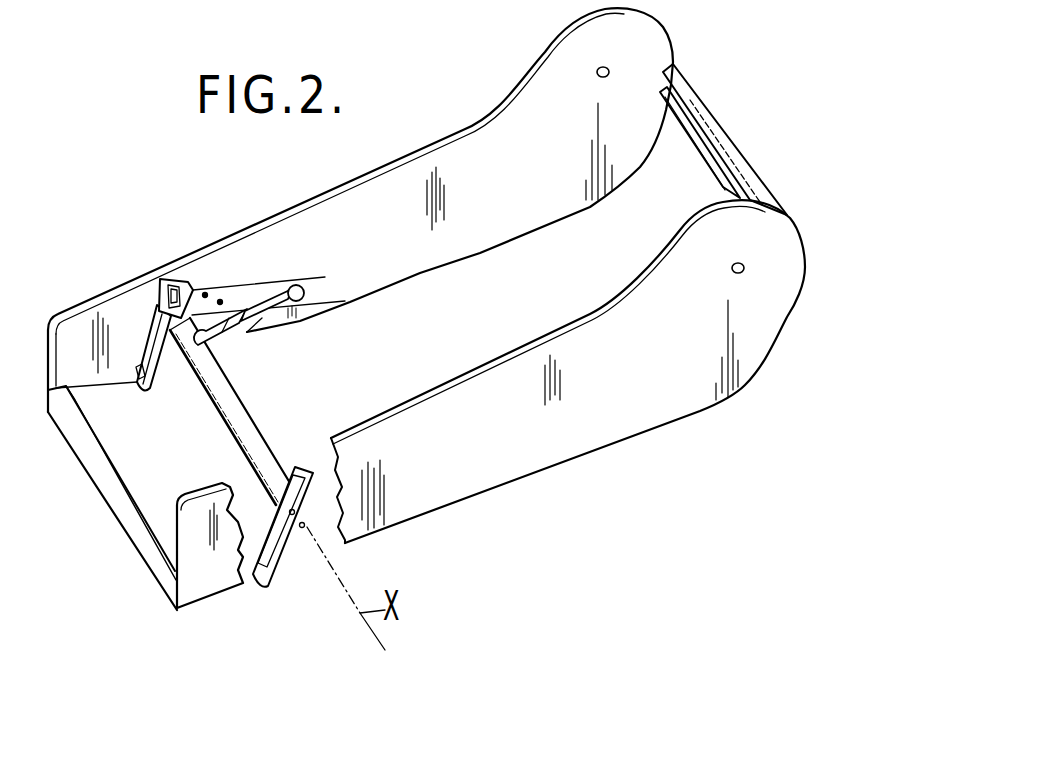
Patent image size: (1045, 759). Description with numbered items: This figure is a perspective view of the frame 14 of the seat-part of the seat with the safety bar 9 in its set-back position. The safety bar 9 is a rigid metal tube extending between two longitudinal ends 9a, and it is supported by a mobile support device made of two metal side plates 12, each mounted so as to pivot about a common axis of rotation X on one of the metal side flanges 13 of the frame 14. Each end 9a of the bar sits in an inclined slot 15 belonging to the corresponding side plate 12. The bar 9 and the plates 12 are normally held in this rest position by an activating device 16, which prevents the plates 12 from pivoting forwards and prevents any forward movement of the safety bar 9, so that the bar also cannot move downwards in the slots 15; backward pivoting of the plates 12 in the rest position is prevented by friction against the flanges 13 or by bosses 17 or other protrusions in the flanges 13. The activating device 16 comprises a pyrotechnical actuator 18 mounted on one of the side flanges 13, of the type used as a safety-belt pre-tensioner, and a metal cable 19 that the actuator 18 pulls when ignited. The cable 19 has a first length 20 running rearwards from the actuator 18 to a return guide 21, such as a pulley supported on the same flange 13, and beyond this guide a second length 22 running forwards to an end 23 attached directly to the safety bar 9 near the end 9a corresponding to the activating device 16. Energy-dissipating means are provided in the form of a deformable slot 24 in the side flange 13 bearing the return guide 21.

The safety bar 9 is at (243, 432).
The longitudinal end of the safety bar 9a is at (293, 510).
The side plate 12 is at (189, 279).
The side flange 13 is at (477, 147).
The frame 14 is at (824, 280).
The slot 15 is at (153, 340).
The activating device 16 is at (329, 274).
The boss 17 is at (137, 380).
The pyrotechnical actuator 18 is at (227, 338).
The metal cable 19 is at (244, 284).
The first length of the cable 20 is at (272, 314).
The return guide 21 is at (303, 298).
The second length of the cable 22 is at (266, 288).
The end of the cable 23 is at (183, 352).
The deformable slot 24 is at (263, 317).